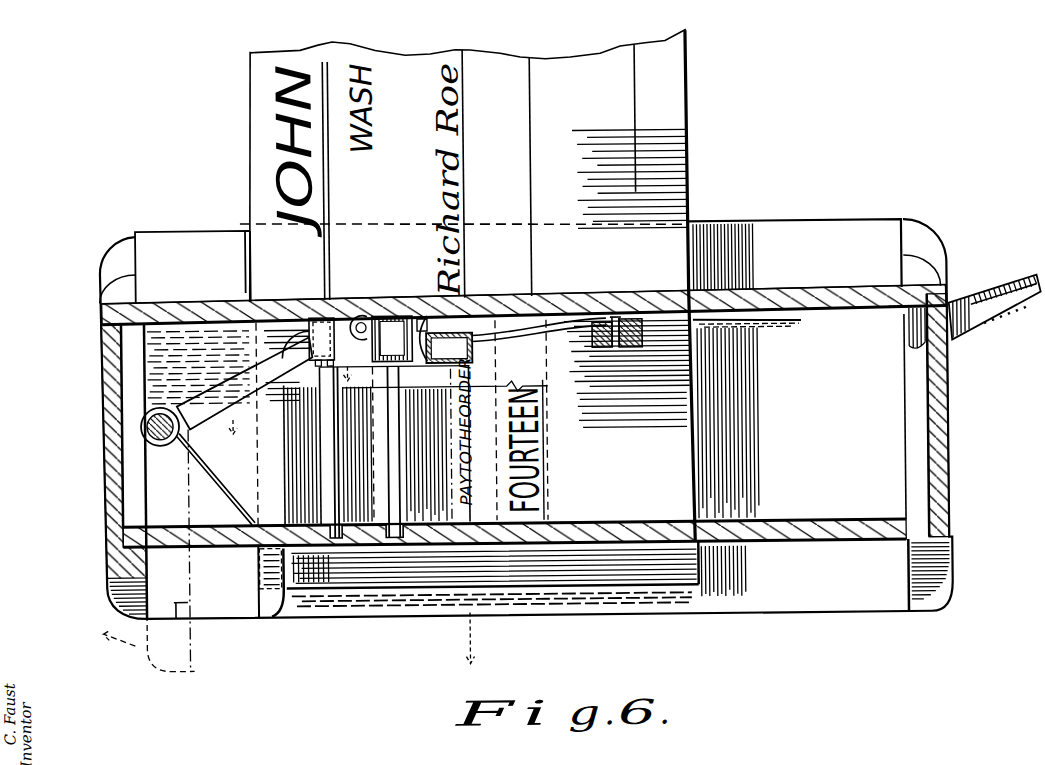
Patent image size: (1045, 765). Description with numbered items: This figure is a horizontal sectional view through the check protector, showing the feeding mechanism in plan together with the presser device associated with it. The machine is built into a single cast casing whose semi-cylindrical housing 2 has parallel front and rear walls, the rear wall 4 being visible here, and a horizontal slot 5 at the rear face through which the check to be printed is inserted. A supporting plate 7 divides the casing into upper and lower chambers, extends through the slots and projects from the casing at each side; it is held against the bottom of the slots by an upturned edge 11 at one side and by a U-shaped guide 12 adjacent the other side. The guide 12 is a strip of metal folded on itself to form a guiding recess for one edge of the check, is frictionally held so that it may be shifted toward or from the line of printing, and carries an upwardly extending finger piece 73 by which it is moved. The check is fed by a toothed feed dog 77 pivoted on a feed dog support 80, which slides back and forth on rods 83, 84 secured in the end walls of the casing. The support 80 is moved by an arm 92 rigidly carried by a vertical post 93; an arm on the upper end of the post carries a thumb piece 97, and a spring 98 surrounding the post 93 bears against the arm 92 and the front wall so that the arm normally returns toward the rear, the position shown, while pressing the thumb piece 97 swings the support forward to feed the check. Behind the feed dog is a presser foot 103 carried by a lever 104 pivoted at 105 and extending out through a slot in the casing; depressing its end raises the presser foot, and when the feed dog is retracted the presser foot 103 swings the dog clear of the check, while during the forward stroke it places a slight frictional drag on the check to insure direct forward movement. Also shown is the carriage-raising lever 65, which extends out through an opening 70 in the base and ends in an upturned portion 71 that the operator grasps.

The semi-cylindrical housing 2 is at (943, 419).
The rear wall 4 is at (851, 299).
The horizontal slot 5 is at (779, 531).
The supporting plate 7 is at (734, 325).
The upturned edge 11 is at (905, 592).
The U-shaped guide 12 is at (270, 597).
The lever 65 is at (946, 356).
The opening 70 is at (348, 328).
The upturned portion 71 is at (987, 298).
The finger piece 73 is at (243, 239).
The feed dog 77 is at (426, 318).
The feed dog support 80 is at (331, 331).
The rod 83 is at (408, 293).
The rod 84 is at (301, 316).
The arm 92 is at (204, 393).
The vertical post 93 is at (144, 433).
The thumb piece 97 is at (175, 664).
The spring 98 is at (222, 495).
The presser foot 103 is at (453, 352).
The lever 104 is at (756, 324).
The pivot 105 is at (630, 318).